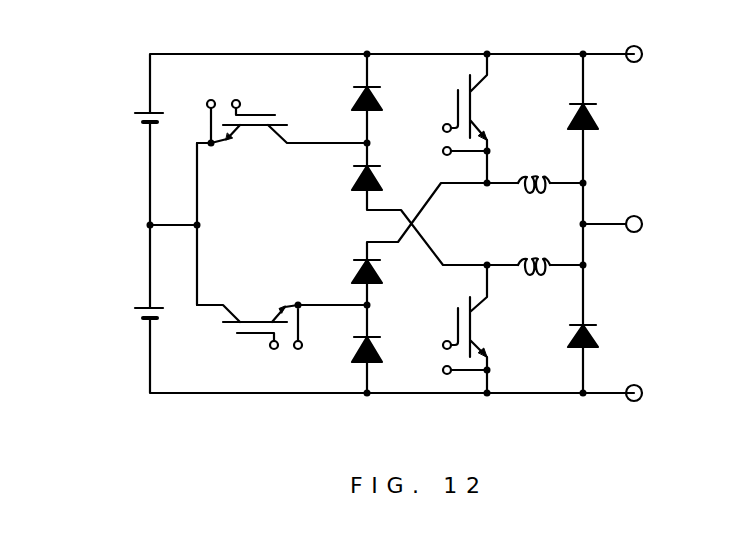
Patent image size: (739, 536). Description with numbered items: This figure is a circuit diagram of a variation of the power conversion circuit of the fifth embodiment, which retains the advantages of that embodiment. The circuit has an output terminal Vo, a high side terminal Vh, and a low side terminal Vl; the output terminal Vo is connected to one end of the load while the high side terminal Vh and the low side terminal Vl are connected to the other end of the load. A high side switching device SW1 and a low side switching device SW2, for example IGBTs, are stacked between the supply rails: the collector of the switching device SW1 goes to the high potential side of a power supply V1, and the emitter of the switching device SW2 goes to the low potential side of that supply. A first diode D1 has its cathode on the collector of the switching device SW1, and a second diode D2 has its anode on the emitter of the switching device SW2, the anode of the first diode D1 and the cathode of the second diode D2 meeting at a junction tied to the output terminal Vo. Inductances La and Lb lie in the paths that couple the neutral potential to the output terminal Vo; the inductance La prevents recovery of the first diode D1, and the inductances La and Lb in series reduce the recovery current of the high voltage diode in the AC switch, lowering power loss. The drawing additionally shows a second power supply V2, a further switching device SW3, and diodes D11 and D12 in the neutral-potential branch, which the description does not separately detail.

The power supply V1 is at (138, 122).
The second DC voltage source V2 is at (138, 318).
The high side switching device SW1 is at (485, 108).
The low side switching device SW2 is at (255, 108).
The third switching element SW3 is at (254, 338).
The first diode D11 is at (349, 95).
The second diode D12 is at (349, 175).
The first diode D1 is at (605, 118).
The second diode D2 is at (605, 338).
The inductance La is at (527, 172).
The inductance Lb is at (527, 254).
The high side terminal Vh is at (646, 44).
The output terminal Vo is at (648, 225).
The low side terminal Vl is at (647, 382).